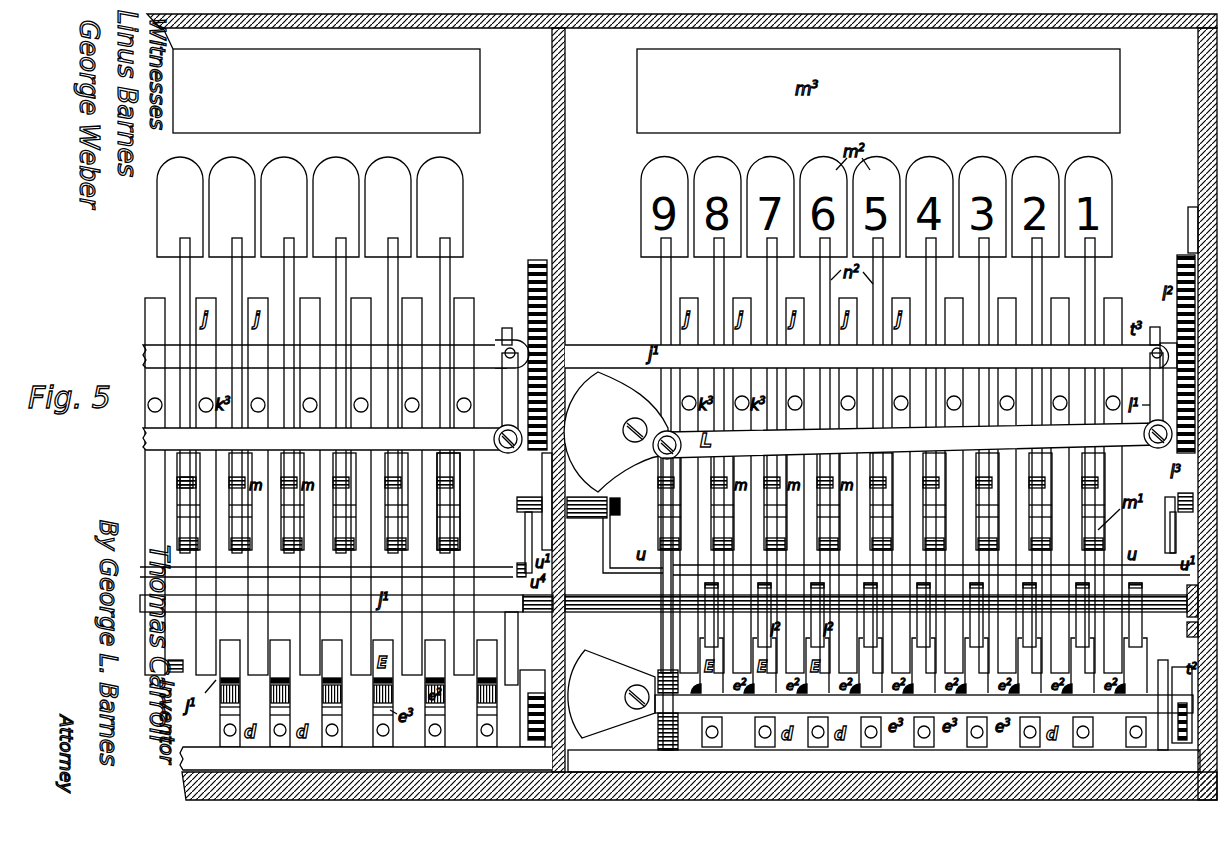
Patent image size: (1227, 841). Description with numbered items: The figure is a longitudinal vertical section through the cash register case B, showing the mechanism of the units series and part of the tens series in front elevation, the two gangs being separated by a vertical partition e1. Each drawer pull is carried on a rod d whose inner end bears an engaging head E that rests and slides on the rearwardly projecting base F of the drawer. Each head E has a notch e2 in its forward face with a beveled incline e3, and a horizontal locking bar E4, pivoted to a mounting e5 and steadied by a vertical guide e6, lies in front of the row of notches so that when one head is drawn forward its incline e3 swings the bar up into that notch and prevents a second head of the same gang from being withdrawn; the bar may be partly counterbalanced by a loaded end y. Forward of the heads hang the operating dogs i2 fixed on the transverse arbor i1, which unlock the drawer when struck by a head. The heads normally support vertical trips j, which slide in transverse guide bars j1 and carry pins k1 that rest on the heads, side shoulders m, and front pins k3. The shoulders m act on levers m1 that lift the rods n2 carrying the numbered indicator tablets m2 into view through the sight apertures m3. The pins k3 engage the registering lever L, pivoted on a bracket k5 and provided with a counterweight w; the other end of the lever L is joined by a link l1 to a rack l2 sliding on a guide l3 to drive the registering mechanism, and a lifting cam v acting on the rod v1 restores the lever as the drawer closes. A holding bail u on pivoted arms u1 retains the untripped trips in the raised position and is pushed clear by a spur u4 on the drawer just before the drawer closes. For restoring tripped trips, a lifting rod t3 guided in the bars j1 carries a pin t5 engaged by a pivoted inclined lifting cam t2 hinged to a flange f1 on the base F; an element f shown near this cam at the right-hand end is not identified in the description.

The sight apertures m3 is at (326, 91).
The indicator tablet m2 is at (326, 170).
The rod n2 is at (330, 284).
The trips j is at (155, 486).
The guide frames or bars j1 is at (336, 354).
The driving pins or projections k3 is at (176, 404).
The link l1 is at (502, 405).
The rack l2 is at (528, 355).
The guide l3 is at (534, 515).
The registering lever L is at (327, 439).
The bracket k5 is at (616, 432).
The heavy end or weight w is at (605, 454).
The connection or rod v1 is at (663, 510).
The holding bail u is at (326, 561).
The vertical arms u1 is at (615, 535).
The thrusting arm or spur u4 is at (1183, 606).
The shaft or arbor i1 is at (626, 613).
The operating dogs or swing arms i2 is at (712, 630).
The driving projections or shoulders m is at (195, 485).
The levers m1 is at (462, 528).
The engaging head E is at (332, 693).
The locking bar E4 is at (924, 705).
The notch or recess e2 is at (381, 699).
The incline e3 is at (340, 710).
The mounting e5 is at (575, 663).
The vertical guide e6 is at (1173, 698).
The vertical partitions e1 is at (562, 168).
The horizontal pin or projection k1 is at (177, 656).
The operating shanks or rods d is at (712, 732).
The lifting cam t2 is at (532, 699).
The lifting rod t3 is at (512, 650).
The pin t5 is at (524, 688).
The supporting flange f1 is at (526, 745).
The frame f is at (1194, 700).
The base F is at (366, 759).
The loaded end y is at (611, 694).
The lifting cam v is at (658, 733).
The case or inclosing frame B is at (588, 70).